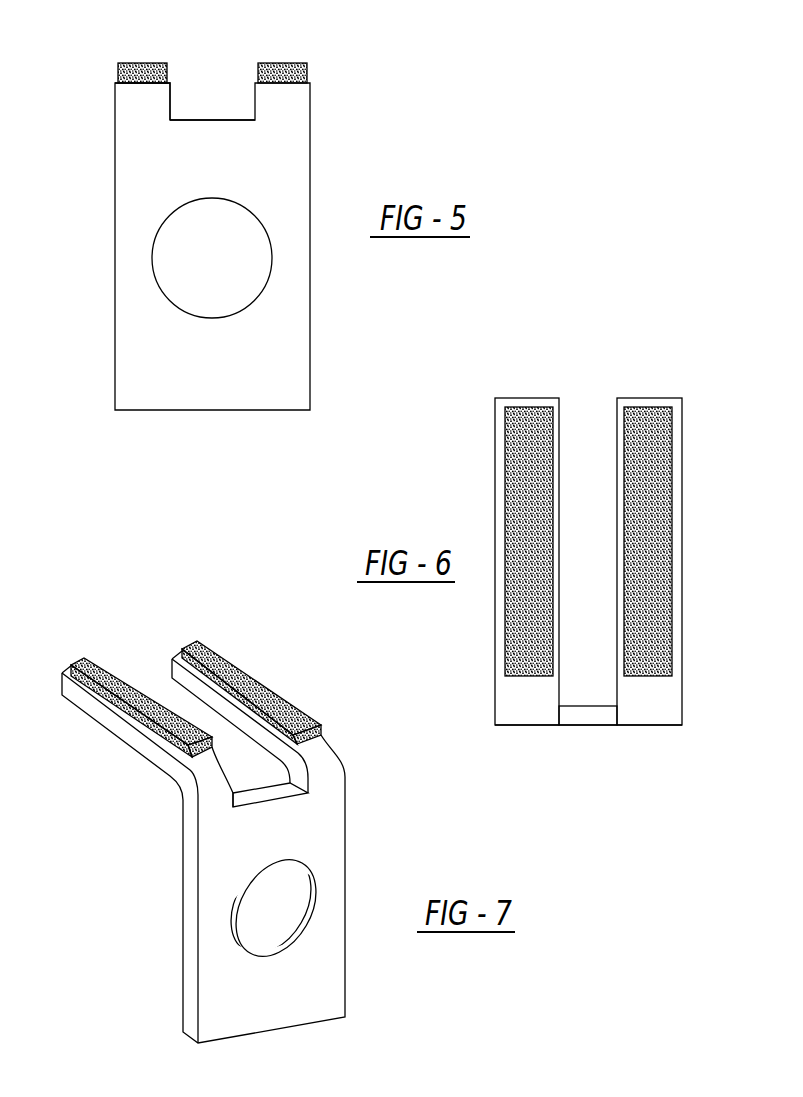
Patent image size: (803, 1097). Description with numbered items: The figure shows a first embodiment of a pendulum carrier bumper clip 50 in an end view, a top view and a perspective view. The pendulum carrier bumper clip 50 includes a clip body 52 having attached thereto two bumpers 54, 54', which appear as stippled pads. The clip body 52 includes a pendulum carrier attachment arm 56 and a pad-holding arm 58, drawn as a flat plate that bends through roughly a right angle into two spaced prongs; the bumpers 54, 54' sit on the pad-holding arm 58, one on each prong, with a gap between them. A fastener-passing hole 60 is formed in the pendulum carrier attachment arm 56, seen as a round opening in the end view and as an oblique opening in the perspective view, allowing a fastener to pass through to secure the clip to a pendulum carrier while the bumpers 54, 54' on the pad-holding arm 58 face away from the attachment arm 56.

In FIG. 5, the pendulum carrier bumper clip 50 is at (97, 288).
In FIG. 6, the pendulum carrier bumper clip 50 is at (453, 493).
In FIG. 7, the pendulum carrier bumper clip 50 is at (130, 838).
In FIG. 5, the clip body 52 is at (128, 185).
In FIG. 6, the clip body 52 is at (665, 698).
In FIG. 7, the clip body 52 is at (193, 925).
In FIG. 5, the bumper 54 is at (126, 52).
In FIG. 6, the bumper 54 is at (529, 489).
In FIG. 7, the bumper 54 is at (138, 672).
In FIG. 5, the bumper 54' is at (326, 52).
In FIG. 6, the bumper 54' is at (688, 537).
In FIG. 7, the bumper 54' is at (251, 660).
In FIG. 5, the pendulum carrier attachment arm 56 is at (275, 350).
In FIG. 6, the pendulum carrier attachment arm 56 is at (585, 718).
In FIG. 7, the pendulum carrier attachment arm 56 is at (323, 805).
In FIG. 5, the pad-holding arm 58 is at (130, 107).
In FIG. 6, the pad-holding arm 58 is at (677, 593).
In FIG. 7, the pad-holding arm 58 is at (117, 721).
In FIG. 5, the fastener-passing hole 60 is at (205, 203).
In FIG. 7, the fastener-passing hole 60 is at (262, 866).